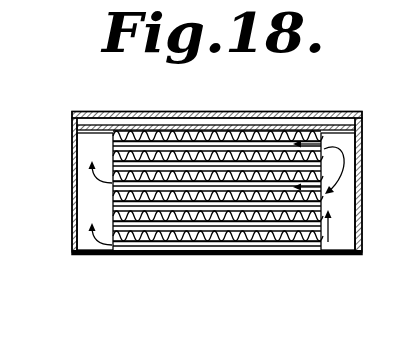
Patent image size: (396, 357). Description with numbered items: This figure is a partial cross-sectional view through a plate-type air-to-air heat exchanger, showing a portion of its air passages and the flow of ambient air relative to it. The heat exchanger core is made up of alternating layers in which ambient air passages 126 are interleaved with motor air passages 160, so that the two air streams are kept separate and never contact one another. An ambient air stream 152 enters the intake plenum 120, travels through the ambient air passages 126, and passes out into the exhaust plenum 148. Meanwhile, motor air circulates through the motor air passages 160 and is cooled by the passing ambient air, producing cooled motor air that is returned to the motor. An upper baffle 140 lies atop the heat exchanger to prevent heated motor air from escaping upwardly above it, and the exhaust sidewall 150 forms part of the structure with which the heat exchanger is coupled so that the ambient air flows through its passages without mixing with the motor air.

The intake plenum 120 is at (363, 244).
The ambient air passages 126 is at (221, 134).
The upper baffle 140 is at (127, 133).
The exhaust plenum 148 is at (70, 220).
The exhaust sidewall 150 is at (113, 189).
The ambient air stream 152 is at (337, 134).
The motor air passages 160 is at (135, 244).